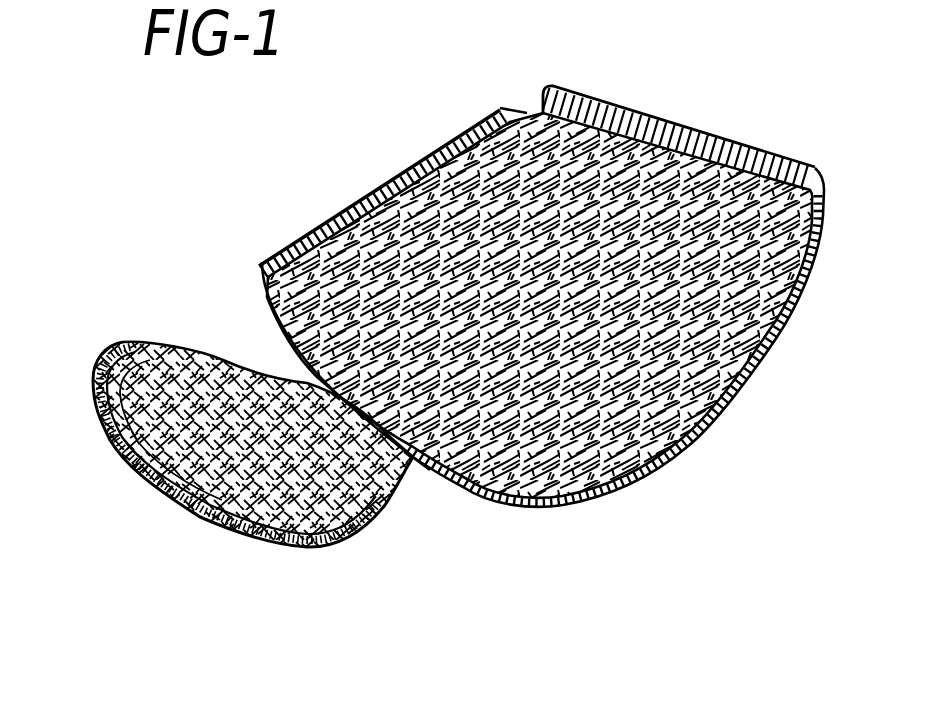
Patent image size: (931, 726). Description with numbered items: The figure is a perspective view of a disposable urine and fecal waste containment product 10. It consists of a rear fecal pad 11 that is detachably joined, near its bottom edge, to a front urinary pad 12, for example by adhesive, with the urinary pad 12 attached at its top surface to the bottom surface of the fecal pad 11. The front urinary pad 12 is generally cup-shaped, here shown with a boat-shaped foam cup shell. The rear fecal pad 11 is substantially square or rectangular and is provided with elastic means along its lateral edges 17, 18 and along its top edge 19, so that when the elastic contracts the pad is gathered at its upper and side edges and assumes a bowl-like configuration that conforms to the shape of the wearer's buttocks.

The disposable urine and fecal waste containment product 10 is at (172, 191).
The rear fecal pad 11 is at (524, 206).
The front urinary pad 12 is at (140, 338).
The lateral edge 17 is at (388, 185).
The lateral edge 18 is at (737, 394).
The top edge 19 is at (715, 134).